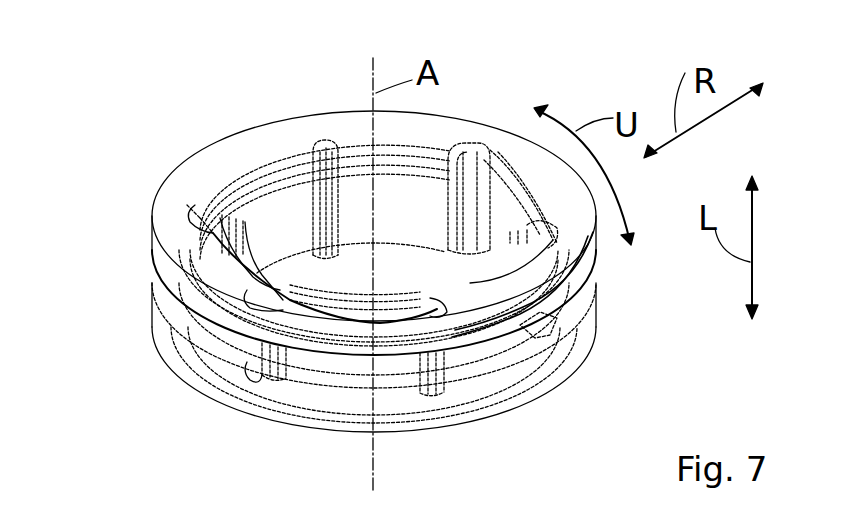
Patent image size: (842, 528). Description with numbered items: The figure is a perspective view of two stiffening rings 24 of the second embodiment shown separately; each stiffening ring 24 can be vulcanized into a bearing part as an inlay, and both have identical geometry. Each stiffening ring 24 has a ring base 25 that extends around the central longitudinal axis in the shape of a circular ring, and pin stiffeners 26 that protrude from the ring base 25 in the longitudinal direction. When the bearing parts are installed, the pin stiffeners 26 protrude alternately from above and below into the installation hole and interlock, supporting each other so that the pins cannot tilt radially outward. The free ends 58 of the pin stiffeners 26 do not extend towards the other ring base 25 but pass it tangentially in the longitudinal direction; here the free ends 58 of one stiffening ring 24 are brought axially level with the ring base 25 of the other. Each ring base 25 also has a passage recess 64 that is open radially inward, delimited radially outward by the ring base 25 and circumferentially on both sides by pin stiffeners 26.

The stiffening ring 24 is at (172, 178).
The ring base 25 is at (420, 252).
The pin stiffener 26 is at (368, 176).
The free end 58 is at (258, 180).
The passage recess 64 is at (198, 226).